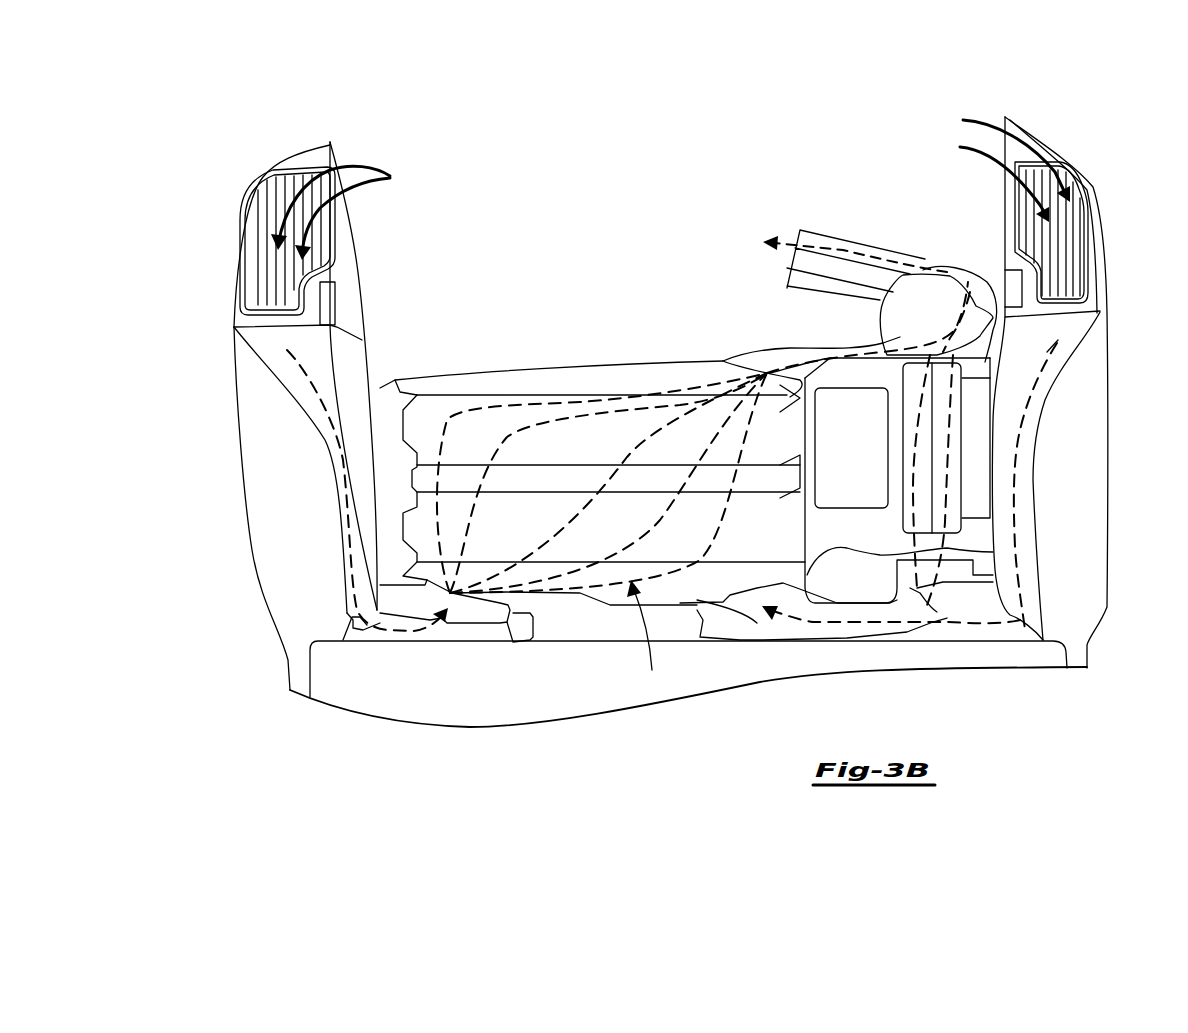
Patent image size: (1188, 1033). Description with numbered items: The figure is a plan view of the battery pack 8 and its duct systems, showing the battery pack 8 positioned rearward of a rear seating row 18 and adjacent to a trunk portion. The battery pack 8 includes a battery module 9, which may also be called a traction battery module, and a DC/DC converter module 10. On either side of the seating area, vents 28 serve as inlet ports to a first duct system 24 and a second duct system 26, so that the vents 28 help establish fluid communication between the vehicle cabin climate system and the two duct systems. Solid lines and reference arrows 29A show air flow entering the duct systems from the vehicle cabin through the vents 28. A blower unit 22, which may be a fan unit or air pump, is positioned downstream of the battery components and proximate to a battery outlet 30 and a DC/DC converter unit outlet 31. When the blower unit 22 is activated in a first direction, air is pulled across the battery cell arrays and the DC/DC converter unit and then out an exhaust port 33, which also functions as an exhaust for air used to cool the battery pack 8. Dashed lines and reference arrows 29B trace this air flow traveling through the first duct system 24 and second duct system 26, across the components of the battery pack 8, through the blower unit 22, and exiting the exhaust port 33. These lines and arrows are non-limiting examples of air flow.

The battery pack 8 is at (640, 640).
The battery module 9 is at (515, 378).
The DC/DC converter module 10 is at (873, 535).
The rear seating row 18 is at (497, 727).
The blower unit 22 is at (917, 297).
The first duct system 24 is at (328, 473).
The second duct system 26 is at (1036, 521).
The vents 28 is at (263, 260).
The reference arrows showing air flow entering duct systems 29A is at (350, 176).
The reference arrows showing air flow through duct systems 29B is at (397, 632).
The battery outlet 30 is at (750, 362).
The DC/DC converter unit outlet 31 is at (932, 358).
The exhaust port 33 is at (770, 233).